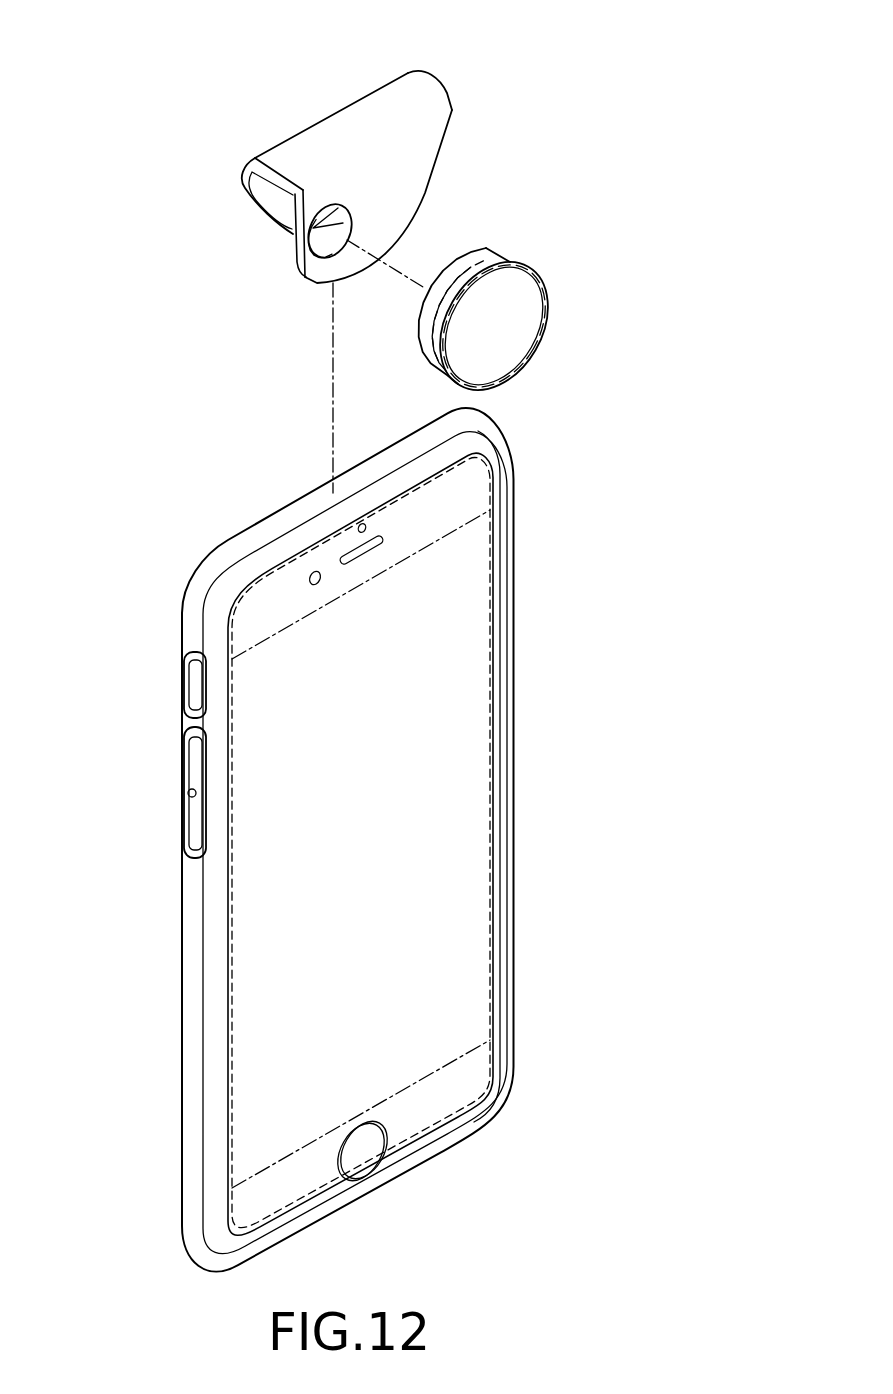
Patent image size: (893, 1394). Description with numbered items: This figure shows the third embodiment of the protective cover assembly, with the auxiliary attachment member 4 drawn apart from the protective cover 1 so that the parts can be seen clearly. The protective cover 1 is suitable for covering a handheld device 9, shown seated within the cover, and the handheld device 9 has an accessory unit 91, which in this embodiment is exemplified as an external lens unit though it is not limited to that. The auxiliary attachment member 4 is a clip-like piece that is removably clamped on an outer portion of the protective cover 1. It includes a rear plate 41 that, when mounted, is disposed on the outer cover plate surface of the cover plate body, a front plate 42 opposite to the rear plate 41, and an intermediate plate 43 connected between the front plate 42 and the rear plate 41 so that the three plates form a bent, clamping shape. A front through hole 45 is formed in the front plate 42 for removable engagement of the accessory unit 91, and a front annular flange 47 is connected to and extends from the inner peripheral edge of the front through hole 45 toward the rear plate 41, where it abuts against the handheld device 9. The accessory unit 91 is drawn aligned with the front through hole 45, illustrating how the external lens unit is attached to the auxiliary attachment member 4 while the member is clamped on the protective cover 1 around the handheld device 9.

The protective cover 1 is at (186, 570).
The auxiliary attachment member 4 is at (343, 251).
The handheld device 9 is at (450, 942).
The rear plate 41 is at (265, 190).
The front plate 42 is at (415, 160).
The intermediate plate 43 is at (395, 108).
The front through hole 45 is at (318, 258).
The front annular flange 47 is at (343, 223).
The accessory unit 91 is at (497, 343).